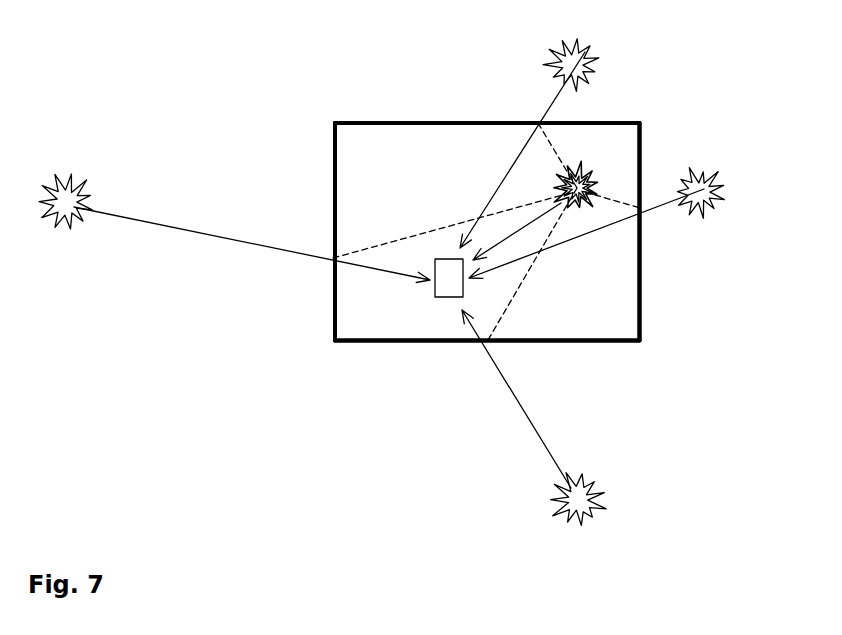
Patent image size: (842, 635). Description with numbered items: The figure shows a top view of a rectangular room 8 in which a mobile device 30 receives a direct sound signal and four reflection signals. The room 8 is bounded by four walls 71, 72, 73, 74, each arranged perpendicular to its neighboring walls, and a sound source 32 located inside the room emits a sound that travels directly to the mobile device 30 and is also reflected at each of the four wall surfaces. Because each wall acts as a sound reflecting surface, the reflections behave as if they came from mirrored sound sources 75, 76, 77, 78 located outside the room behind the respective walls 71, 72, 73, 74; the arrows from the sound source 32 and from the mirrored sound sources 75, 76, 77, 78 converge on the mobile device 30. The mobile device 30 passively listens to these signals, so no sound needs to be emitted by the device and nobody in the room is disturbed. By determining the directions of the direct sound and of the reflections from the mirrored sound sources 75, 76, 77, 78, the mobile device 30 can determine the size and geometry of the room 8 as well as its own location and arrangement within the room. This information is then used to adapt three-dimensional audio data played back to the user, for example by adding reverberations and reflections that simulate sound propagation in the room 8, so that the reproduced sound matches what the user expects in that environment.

The room 8 is at (370, 153).
The mobile device 30 is at (438, 288).
The sound source 32 is at (585, 180).
The wall 71 is at (477, 122).
The wall 72 is at (640, 272).
The wall 73 is at (415, 345).
The wall 74 is at (332, 320).
The mirrored sound source 75 is at (585, 52).
The mirrored sound source 76 is at (708, 205).
The mirrored sound source 77 is at (592, 493).
The mirrored sound source 78 is at (75, 180).